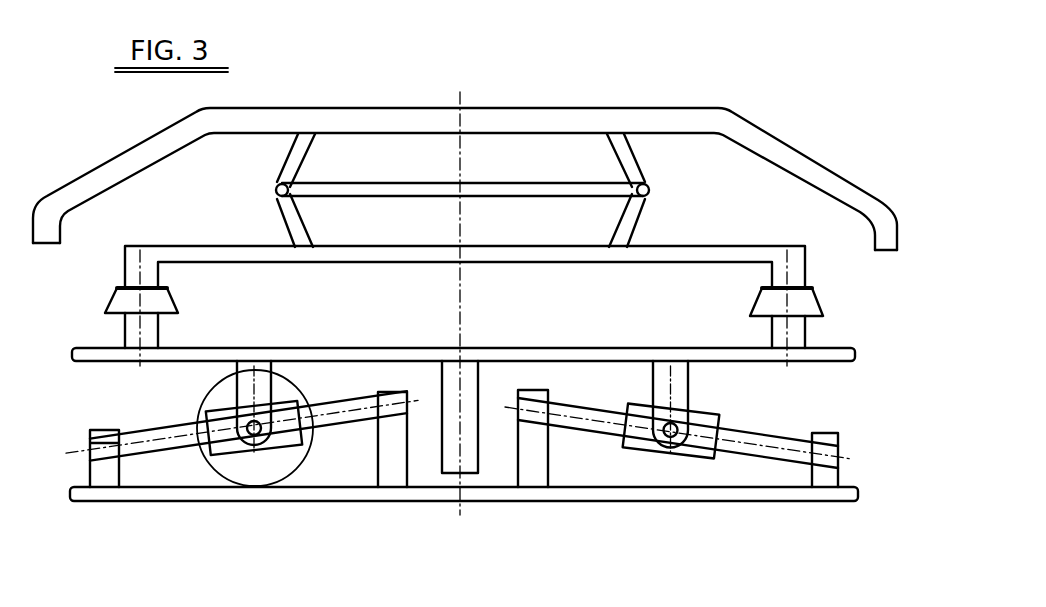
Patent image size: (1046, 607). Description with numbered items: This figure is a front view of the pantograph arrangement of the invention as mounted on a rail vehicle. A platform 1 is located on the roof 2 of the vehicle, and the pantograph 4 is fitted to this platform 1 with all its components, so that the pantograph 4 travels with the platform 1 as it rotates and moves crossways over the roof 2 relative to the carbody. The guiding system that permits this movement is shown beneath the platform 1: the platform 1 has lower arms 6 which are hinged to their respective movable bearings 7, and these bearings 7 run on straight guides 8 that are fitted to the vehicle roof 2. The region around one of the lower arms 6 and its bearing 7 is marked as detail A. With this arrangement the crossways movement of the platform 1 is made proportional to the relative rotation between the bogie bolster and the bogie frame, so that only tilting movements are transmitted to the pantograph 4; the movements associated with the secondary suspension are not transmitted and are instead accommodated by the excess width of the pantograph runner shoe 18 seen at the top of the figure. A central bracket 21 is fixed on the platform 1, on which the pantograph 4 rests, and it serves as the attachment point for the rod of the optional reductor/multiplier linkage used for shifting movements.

The platform 1 is at (595, 358).
The roof 2 is at (610, 497).
The pantograph 4 is at (367, 255).
The lower arms 6 is at (260, 395).
The movable bearings 7 is at (282, 437).
The straight guides 8 is at (157, 448).
The pantograph runner shoe 18 is at (557, 122).
The central bracket 21 is at (472, 445).
The detail region A is at (198, 410).